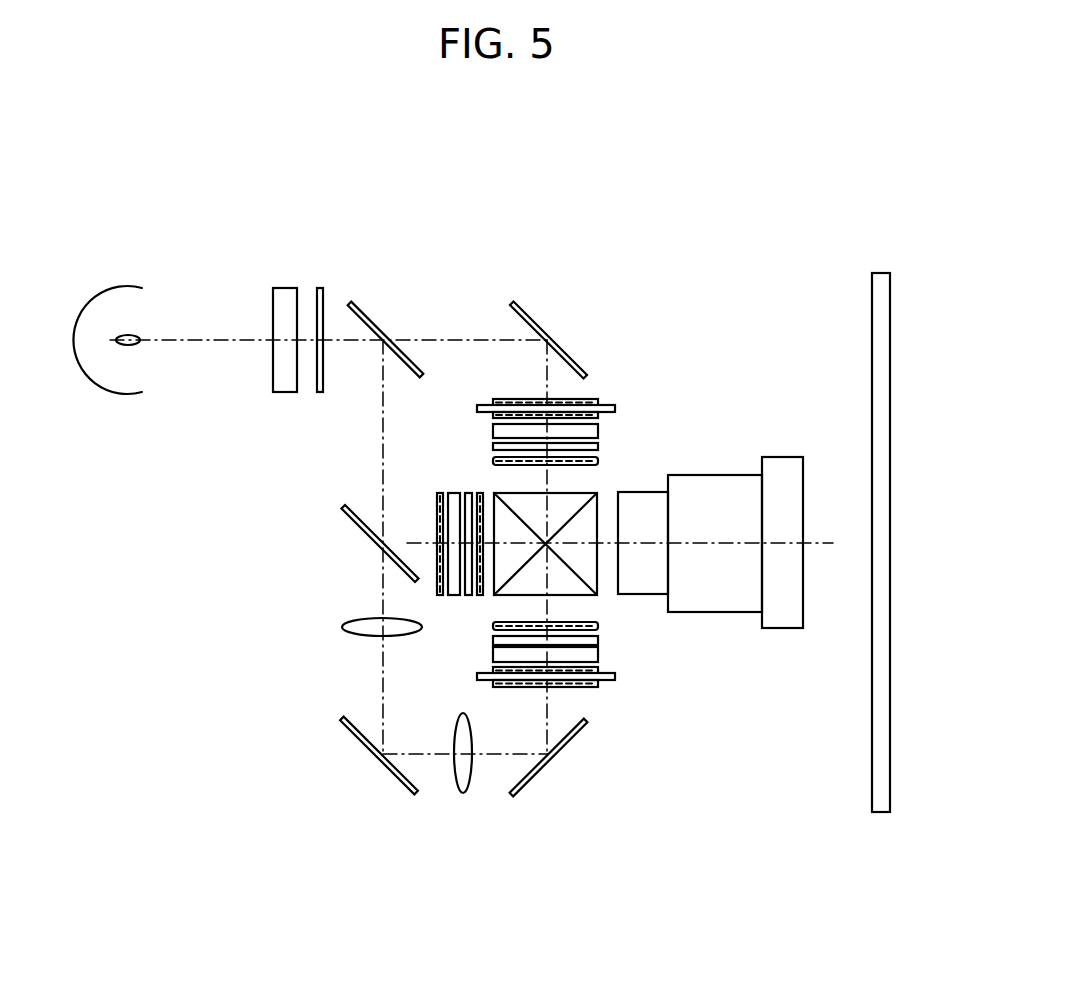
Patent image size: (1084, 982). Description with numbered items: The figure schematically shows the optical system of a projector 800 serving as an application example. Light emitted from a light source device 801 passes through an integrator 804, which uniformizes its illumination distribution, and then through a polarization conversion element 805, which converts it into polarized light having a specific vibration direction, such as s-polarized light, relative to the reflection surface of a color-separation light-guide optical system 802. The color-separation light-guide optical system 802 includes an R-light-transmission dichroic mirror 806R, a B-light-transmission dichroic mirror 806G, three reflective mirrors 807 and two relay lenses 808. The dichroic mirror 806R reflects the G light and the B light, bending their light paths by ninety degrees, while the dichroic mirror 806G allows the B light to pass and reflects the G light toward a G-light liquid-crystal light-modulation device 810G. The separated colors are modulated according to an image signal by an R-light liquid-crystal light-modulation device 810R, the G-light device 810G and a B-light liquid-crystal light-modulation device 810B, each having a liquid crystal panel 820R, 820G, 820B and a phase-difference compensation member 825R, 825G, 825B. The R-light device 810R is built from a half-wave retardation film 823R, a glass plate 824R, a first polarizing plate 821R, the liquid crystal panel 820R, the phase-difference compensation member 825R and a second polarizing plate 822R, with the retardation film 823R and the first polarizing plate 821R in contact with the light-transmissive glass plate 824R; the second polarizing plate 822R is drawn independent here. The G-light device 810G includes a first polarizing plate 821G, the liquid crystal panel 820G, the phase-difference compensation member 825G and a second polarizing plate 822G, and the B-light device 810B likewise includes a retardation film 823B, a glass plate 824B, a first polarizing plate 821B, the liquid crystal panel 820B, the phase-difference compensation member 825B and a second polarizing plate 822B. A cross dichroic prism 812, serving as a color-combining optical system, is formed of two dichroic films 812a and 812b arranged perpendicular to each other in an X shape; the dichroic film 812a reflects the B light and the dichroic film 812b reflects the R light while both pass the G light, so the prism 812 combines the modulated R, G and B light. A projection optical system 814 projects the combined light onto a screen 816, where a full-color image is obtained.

The projector 800 is at (672, 238).
The light source device 801 is at (115, 392).
The color-separation light-guide optical system 802 is at (518, 248).
The integrator 804 is at (285, 288).
The polarization conversion element 805 is at (320, 288).
The R-light-transmission dichroic mirror 806R is at (372, 300).
The B-light-transmission dichroic mirror 806G is at (357, 525).
The reflective mirror 807 is at (535, 315).
The relay lens 808 is at (352, 619).
The R-light liquid-crystal light-modulation device 810R is at (648, 369).
The G-light liquid-crystal light-modulation device 810G is at (328, 615).
The B-light liquid-crystal light-modulation device 810B is at (648, 720).
The cross dichroic prism 812 is at (624, 512).
The dichroic film 812a is at (582, 494).
The dichroic film 812b is at (500, 493).
The projection optical system 814 is at (783, 620).
The screen 816 is at (878, 272).
The liquid crystal panel 820R is at (598, 430).
The liquid crystal panel 820G is at (454, 598).
The liquid crystal panel 820B is at (598, 655).
The first polarizing plate 821R is at (598, 414).
The first polarizing plate 821G is at (440, 598).
The first polarizing plate 821B is at (598, 676).
The second polarizing plate 822R is at (612, 445).
The second polarizing plate 822G is at (480, 598).
The second polarizing plate 822B is at (598, 626).
The λ/2 retardation film 823R is at (590, 399).
The λ/2 retardation film 823B is at (611, 749).
The glass plate 824R is at (615, 407).
The glass plate 824B is at (610, 681).
The phase-difference compensation member 825R is at (598, 446).
The phase-difference compensation member 825G is at (468, 598).
The phase-difference compensation member 825B is at (598, 641).